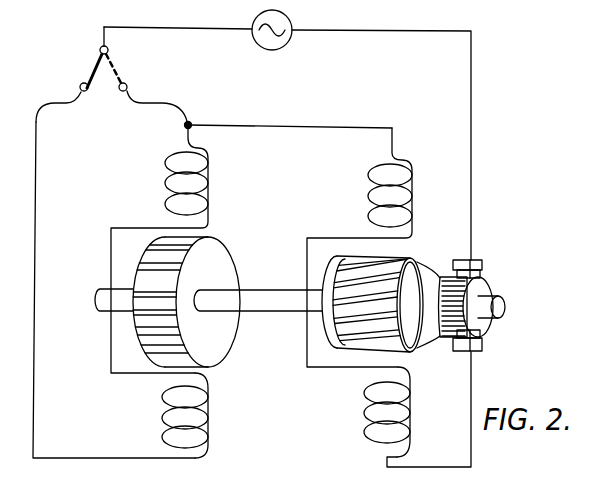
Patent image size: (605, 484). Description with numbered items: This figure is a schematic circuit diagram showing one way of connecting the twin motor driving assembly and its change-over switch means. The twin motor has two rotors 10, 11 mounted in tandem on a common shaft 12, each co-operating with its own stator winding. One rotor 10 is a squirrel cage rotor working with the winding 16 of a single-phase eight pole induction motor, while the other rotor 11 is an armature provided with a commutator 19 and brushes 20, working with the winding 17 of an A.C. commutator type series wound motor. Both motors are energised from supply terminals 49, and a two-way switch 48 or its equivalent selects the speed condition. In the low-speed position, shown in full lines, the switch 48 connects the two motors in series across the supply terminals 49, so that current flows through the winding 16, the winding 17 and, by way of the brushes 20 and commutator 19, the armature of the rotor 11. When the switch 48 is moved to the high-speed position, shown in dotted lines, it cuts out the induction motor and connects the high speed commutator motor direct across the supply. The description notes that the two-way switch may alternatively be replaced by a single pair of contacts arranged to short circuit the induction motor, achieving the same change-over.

The rotor 10 is at (220, 268).
The rotor 11 is at (392, 268).
The common shaft 12 is at (268, 300).
The winding 16 is at (209, 161).
The winding 17 is at (412, 178).
The commutator 19 is at (462, 302).
The brushes 20 is at (478, 263).
The two-way switch 48 is at (92, 69).
The supply terminals 49 is at (288, 38).